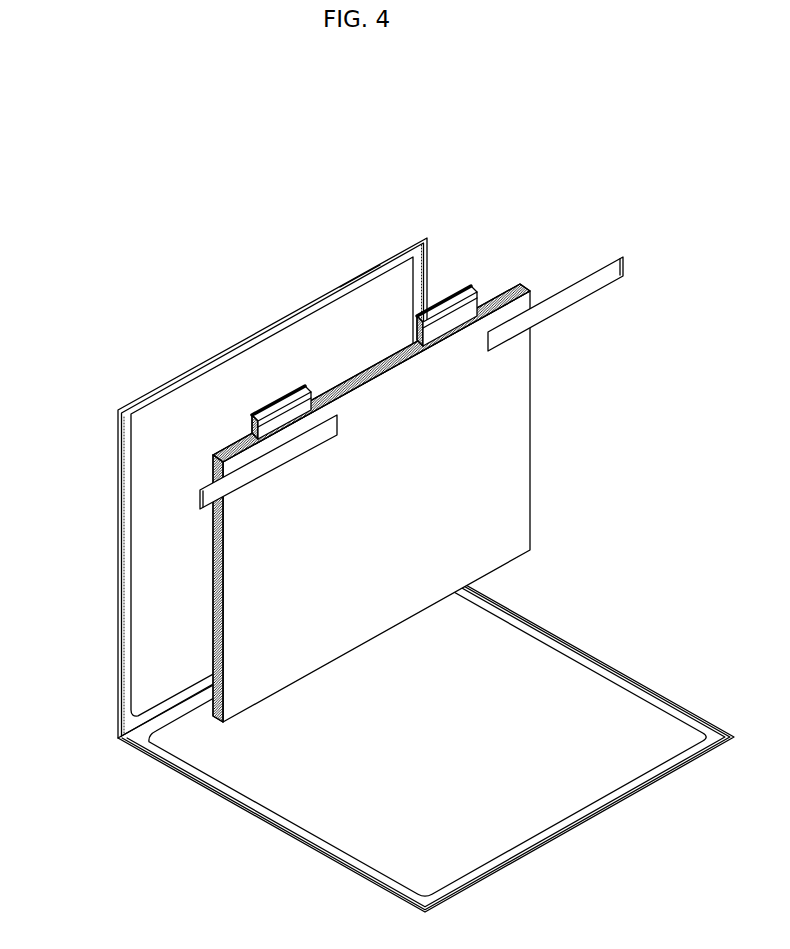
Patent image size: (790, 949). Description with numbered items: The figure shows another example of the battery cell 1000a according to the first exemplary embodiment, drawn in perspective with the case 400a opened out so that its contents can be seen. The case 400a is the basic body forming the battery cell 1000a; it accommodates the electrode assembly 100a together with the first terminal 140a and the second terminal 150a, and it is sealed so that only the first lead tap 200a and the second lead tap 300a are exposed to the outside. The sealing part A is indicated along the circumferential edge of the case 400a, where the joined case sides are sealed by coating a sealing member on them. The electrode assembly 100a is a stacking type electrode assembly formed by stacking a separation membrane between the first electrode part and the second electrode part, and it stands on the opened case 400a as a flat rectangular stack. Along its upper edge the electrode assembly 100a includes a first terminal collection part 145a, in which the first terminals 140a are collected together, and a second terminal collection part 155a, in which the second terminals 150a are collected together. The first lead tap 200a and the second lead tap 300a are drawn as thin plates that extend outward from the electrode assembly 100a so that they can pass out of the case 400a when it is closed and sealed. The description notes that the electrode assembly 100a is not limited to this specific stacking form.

The battery cell 1000a is at (385, 528).
The case 400a is at (131, 417).
The electrode assembly 100a is at (237, 566).
The first terminal 140a is at (238, 350).
The first terminal collection part 145a is at (268, 412).
The second terminal 150a is at (426, 272).
The second terminal collection part 155a is at (450, 305).
The first lead tap 200a is at (210, 497).
The second lead tap 300a is at (580, 288).
The sealing part A is at (360, 272).